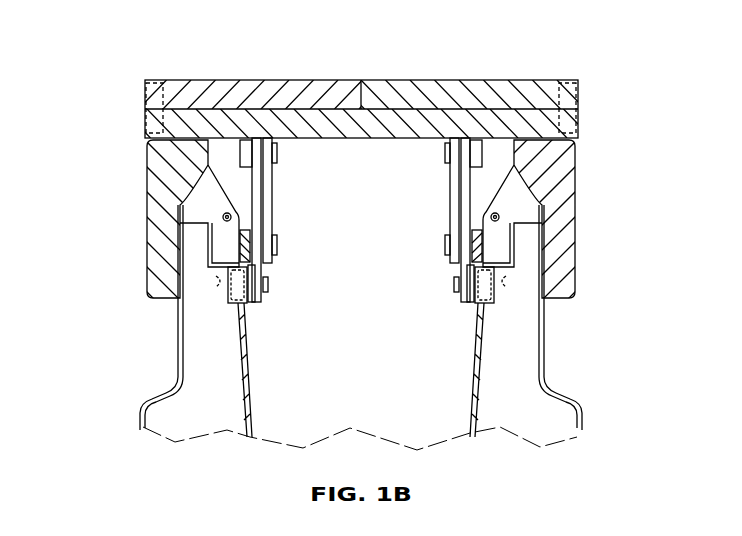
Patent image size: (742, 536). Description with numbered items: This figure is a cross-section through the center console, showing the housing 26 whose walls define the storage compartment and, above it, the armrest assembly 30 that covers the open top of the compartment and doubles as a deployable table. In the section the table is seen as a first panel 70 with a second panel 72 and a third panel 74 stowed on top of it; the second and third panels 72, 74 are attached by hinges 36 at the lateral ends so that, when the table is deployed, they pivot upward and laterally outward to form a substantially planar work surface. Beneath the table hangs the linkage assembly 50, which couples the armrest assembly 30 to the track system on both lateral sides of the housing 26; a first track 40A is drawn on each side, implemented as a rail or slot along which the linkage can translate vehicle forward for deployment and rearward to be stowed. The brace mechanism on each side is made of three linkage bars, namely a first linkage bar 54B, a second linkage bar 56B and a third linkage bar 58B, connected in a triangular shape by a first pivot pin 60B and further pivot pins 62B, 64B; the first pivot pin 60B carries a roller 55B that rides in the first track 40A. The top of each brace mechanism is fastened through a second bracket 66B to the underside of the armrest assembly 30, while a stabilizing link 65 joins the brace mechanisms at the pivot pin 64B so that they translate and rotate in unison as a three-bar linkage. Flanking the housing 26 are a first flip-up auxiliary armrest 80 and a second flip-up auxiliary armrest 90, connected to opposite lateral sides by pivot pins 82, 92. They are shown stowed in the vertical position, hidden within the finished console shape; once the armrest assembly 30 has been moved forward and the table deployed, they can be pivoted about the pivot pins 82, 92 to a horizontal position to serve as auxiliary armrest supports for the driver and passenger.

The housing 26 is at (145, 407).
The armrest assembly 30 is at (562, 56).
The hinges 36 is at (145, 80).
The first track 40A is at (226, 296).
The linkage assembly 50 is at (414, 230).
The first linkage bar 54B is at (208, 168).
The pivot recess 55B is at (223, 281).
The second linkage bar 56B is at (270, 268).
The third linkage bar 58B is at (273, 200).
The first pivot pin 60B is at (269, 286).
The pivot pin 62B is at (273, 186).
The pivot pin 64B is at (278, 246).
The stabilizing link 65 is at (240, 242).
The second bracket 66B is at (240, 150).
The first panel 70 is at (355, 139).
The second panel 72 is at (253, 80).
The third panel 74 is at (468, 80).
The first flip-up auxiliary armrest 80 is at (145, 190).
The pivot pin 82 is at (225, 220).
The second flip-up auxiliary armrest 90 is at (577, 190).
The pivot pin 92 is at (497, 220).